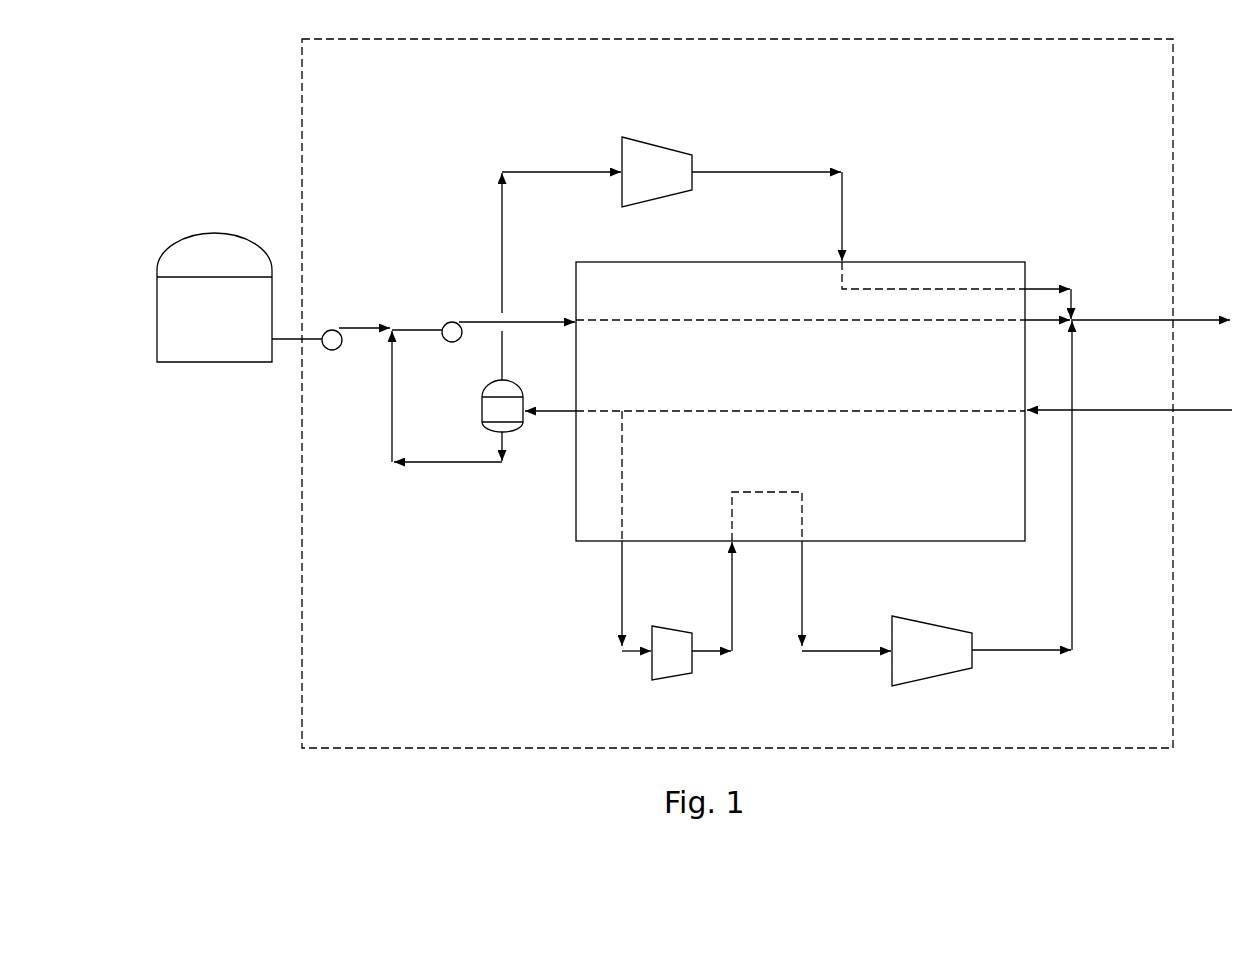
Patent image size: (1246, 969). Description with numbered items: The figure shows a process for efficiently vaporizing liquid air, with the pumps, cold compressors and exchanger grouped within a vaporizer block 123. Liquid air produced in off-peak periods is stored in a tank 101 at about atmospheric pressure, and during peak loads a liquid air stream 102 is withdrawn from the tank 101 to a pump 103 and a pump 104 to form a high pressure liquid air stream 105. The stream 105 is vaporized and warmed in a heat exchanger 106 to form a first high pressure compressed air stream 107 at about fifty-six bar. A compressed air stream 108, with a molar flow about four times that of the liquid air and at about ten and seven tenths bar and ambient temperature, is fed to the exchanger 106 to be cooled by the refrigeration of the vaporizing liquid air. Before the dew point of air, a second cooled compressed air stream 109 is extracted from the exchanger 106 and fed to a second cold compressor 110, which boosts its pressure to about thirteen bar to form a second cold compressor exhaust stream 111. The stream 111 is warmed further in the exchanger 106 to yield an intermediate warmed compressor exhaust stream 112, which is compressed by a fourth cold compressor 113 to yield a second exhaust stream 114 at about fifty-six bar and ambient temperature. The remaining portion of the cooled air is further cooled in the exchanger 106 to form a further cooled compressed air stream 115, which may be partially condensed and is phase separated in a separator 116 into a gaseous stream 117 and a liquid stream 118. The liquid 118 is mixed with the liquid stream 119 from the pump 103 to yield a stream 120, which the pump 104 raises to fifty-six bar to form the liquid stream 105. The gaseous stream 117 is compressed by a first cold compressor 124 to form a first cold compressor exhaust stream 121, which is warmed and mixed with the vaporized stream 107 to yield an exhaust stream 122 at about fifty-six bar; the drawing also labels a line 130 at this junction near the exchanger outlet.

The tank 101 is at (212, 351).
The liquid air stream 102 is at (289, 343).
The pump 103 is at (334, 330).
The pump 104 is at (450, 322).
The high pressure liquid air stream 105 is at (517, 322).
The heat exchanger 106 is at (582, 512).
The first high pressure compressed air stream 107 is at (1032, 321).
The compressed air stream 108 is at (1205, 407).
The second cooled compressed air stream 109 is at (620, 592).
The second cold compressor 110 is at (673, 672).
The second cold compressor exhaust stream 111 is at (733, 654).
The intermediate warmed compressor exhaust stream 112 is at (803, 610).
The fourth cold compressor 113 is at (912, 670).
The second exhaust stream 114 is at (1072, 503).
The further cooled compressed air stream 115 is at (560, 408).
The separator 116 is at (492, 412).
The gaseous stream 117 is at (551, 172).
The liquid stream 118 is at (462, 462).
The liquid stream 119 is at (360, 327).
The stream 120 is at (410, 333).
The first cold compressor exhaust stream 121 is at (752, 172).
The exhaust stream 122 is at (1206, 316).
The vaporizer block 123 is at (322, 718).
The first cold compressor 124 is at (672, 182).
The outlet line 130 is at (1043, 289).